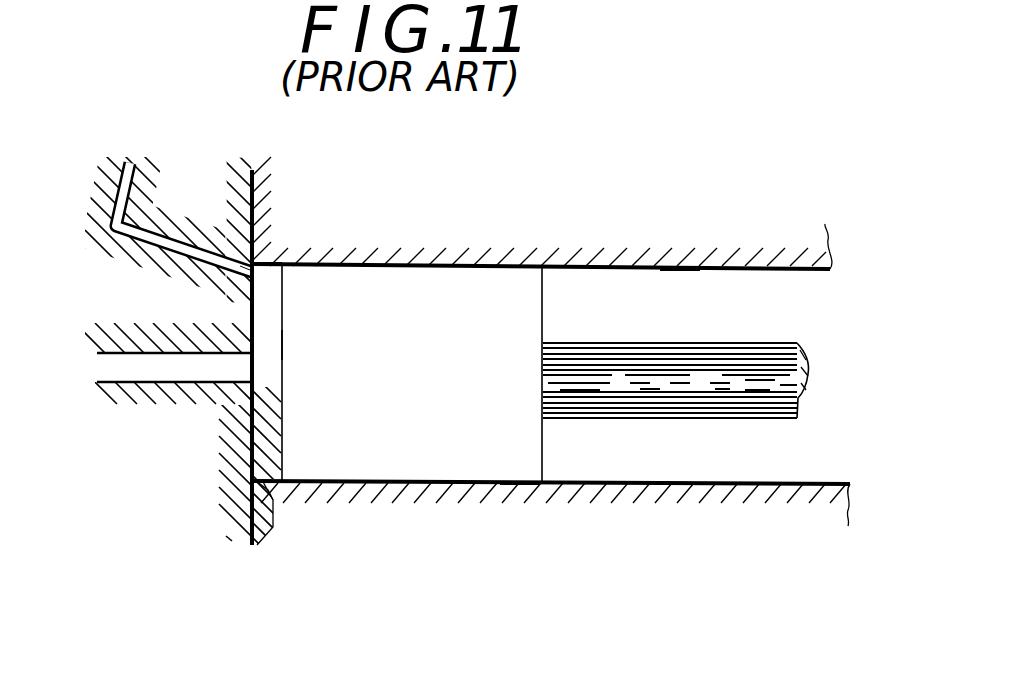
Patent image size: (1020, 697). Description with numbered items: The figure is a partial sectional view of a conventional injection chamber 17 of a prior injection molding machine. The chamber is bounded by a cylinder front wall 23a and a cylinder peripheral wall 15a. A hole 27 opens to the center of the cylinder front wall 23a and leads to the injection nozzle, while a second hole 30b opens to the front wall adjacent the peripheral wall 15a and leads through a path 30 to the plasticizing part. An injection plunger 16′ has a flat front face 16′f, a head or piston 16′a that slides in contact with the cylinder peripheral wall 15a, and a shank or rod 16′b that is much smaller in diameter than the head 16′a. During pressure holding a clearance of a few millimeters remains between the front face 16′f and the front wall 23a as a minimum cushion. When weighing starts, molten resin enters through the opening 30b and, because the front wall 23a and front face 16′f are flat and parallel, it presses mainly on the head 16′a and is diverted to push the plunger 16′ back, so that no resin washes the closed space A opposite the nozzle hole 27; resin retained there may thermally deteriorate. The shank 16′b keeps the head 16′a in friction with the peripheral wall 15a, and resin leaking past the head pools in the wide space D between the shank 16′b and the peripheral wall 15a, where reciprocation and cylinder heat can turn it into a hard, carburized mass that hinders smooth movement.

The path 30 is at (102, 181).
The hole 30b is at (272, 275).
The injection chamber 17 is at (258, 268).
The cylinder peripheral wall 15a is at (471, 258).
The wide space D is at (667, 277).
The cylinder front wall 23a is at (250, 303).
The front face 16′f is at (282, 346).
The hole 27 is at (138, 375).
The closed space A is at (281, 445).
The injection plunger 16′ is at (447, 433).
The head 16′a is at (513, 483).
The shank 16′b is at (687, 403).